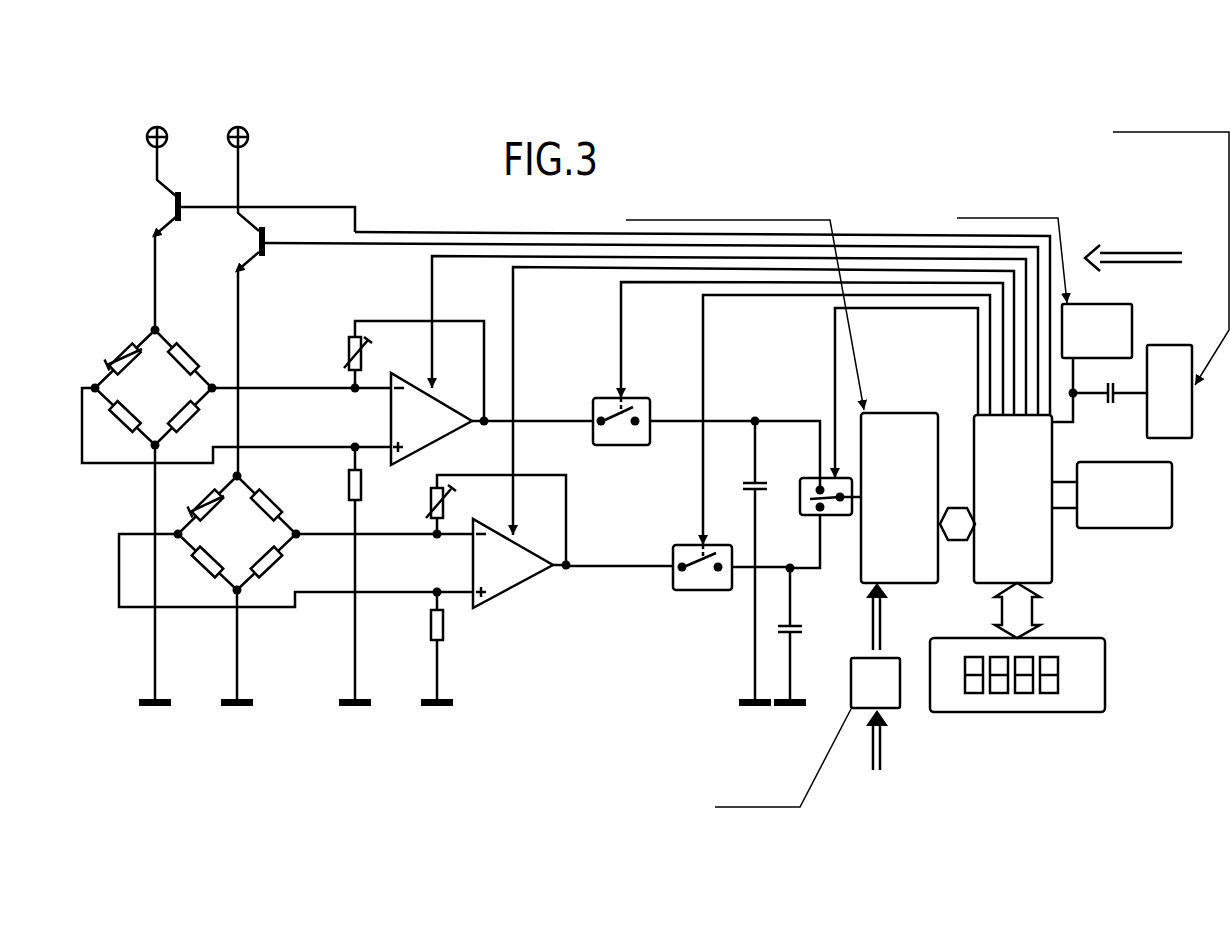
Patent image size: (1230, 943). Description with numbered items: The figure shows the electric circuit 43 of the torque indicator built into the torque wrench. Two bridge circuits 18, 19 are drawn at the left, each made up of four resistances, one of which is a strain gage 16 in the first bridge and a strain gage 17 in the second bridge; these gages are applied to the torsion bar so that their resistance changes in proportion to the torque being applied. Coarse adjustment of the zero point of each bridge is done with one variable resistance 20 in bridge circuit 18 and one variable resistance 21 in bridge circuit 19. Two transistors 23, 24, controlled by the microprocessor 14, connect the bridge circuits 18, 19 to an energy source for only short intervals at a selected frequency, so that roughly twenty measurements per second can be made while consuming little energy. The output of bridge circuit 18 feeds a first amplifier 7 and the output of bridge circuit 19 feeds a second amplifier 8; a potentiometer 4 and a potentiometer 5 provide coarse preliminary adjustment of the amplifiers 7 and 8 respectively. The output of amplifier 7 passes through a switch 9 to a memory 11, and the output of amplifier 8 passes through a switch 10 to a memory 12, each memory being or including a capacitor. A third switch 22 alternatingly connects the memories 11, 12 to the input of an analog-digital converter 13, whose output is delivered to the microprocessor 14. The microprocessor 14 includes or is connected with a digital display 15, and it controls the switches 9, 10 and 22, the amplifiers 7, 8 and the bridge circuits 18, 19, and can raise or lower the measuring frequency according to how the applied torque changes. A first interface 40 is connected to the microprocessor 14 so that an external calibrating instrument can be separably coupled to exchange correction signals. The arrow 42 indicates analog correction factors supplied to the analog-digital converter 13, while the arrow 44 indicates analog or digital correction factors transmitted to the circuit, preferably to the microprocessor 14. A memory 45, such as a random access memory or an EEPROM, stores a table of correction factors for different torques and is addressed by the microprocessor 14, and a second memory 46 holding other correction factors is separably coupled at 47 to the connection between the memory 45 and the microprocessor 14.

The potentiometer 4 is at (348, 333).
The potentiometer 5 is at (435, 500).
The first amplifier 7 is at (408, 406).
The second amplifier 8 is at (508, 565).
The switch 9 is at (612, 434).
The switch 10 is at (693, 576).
The memory 11 is at (768, 483).
The memory 12 is at (798, 631).
The analog-digital converter 13 is at (890, 425).
The microprocessor 14 is at (990, 490).
The digital display 15 is at (1076, 677).
The strain gage 16 is at (122, 425).
The strain gage 17 is at (205, 562).
The bridge circuit 18 is at (146, 393).
The bridge circuit 19 is at (209, 573).
The variable resistance 20 is at (118, 348).
The variable resistance 21 is at (203, 505).
The third switch 22 is at (808, 490).
The transistor 23 is at (175, 207).
The transistor 24 is at (258, 240).
The first interface 40 is at (1142, 512).
The arrow 42 is at (878, 618).
The electric circuit 43 is at (870, 212).
The arrow 44 is at (1143, 262).
The memory 45 is at (1102, 330).
The second memory 46 is at (1177, 380).
The coupling 47 is at (1122, 380).